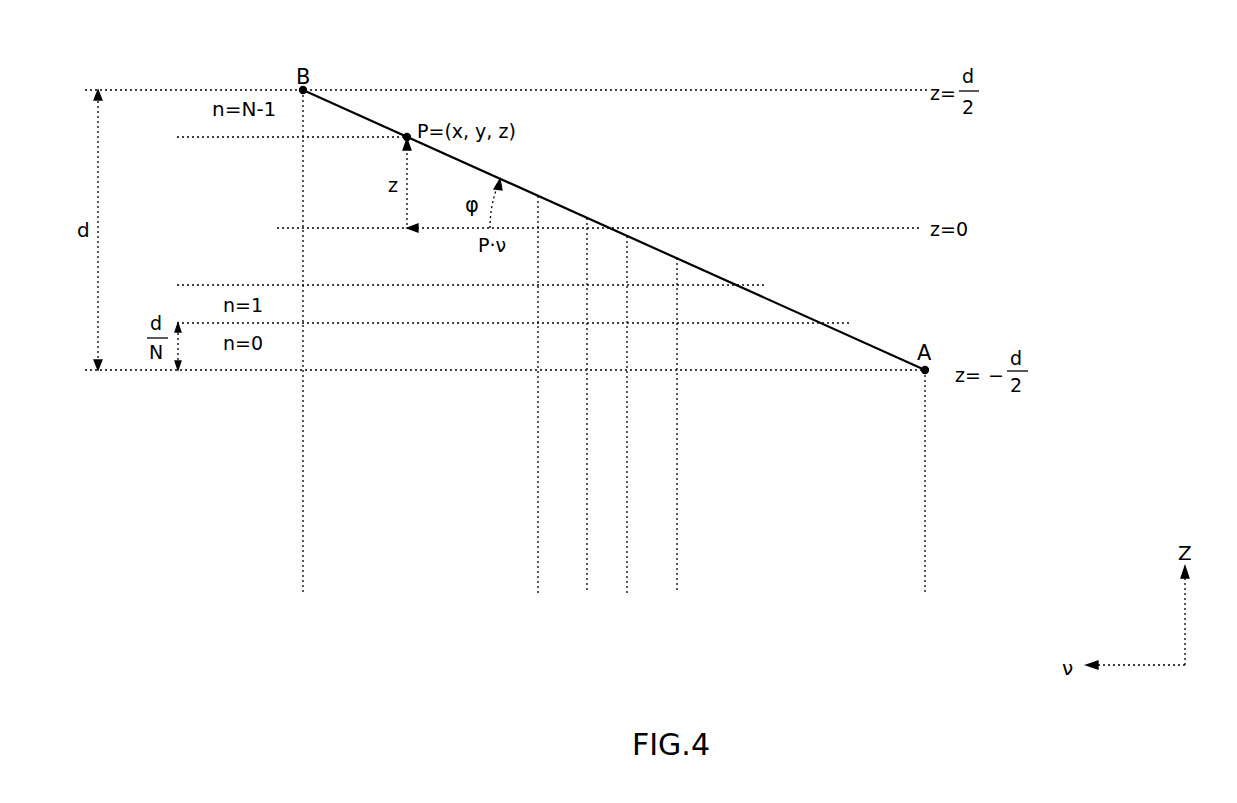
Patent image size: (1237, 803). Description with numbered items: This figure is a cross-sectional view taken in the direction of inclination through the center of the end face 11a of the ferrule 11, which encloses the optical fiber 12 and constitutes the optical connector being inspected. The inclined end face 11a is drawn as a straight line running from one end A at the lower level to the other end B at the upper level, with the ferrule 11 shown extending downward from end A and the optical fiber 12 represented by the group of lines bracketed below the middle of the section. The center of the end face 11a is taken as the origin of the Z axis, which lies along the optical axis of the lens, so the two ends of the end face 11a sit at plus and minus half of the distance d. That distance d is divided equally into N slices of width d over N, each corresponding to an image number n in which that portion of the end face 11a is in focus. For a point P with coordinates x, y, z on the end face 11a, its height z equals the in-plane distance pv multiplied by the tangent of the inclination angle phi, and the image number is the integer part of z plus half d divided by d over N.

The end face 11a is at (366, 116).
The ferrule 11 is at (927, 511).
The optical fiber 12 is at (677, 617).